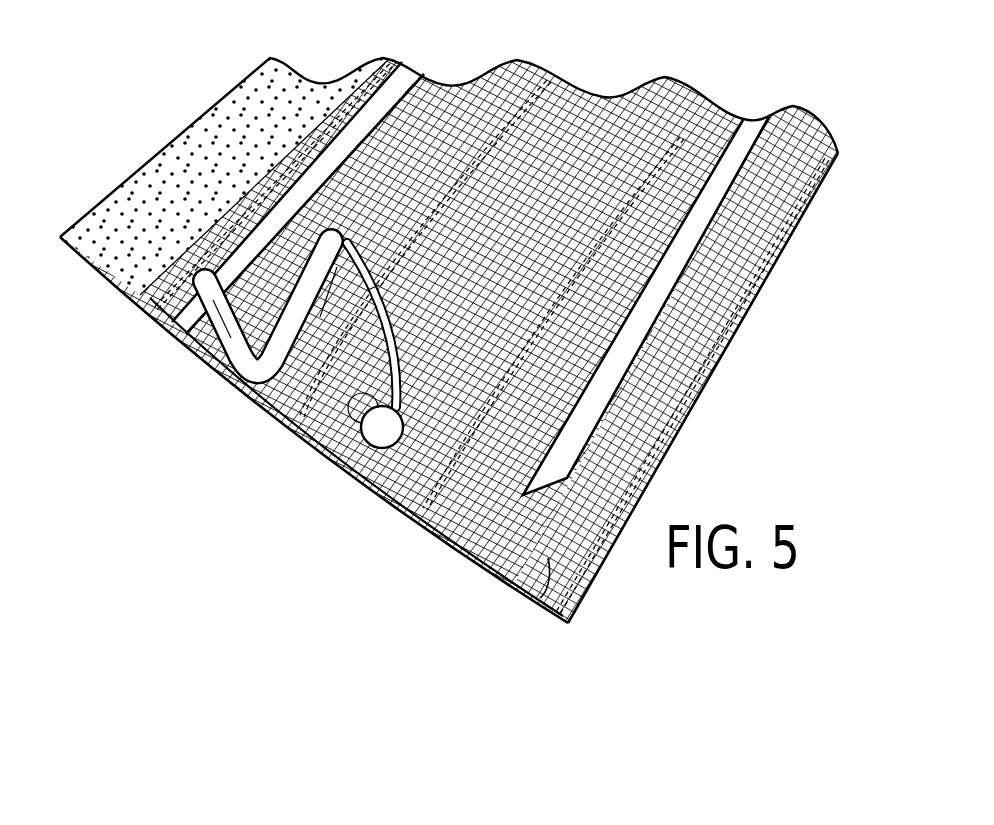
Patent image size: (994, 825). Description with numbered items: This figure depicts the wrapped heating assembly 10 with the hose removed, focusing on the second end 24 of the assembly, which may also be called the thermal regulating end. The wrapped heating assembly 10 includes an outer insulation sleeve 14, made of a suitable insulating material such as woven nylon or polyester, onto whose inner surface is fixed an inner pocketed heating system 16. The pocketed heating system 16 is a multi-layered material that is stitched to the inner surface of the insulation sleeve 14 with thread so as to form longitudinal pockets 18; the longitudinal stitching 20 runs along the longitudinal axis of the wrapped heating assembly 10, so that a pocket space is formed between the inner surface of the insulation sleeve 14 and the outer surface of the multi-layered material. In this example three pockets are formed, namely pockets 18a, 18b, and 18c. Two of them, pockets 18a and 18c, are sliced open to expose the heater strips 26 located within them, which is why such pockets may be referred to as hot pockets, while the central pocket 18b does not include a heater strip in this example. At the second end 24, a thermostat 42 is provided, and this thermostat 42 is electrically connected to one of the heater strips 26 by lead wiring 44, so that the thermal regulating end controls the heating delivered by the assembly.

The wrapped heating assembly 10 is at (475, 344).
The outer insulation sleeve 14 is at (107, 240).
The inner pocketed heating system 16 is at (297, 484).
The longitudinal pocket 18 is at (450, 344).
The first pocket 18a is at (161, 314).
The central pocket 18b is at (293, 425).
The third pocket 18c is at (540, 598).
The longitudinal stitching 20 is at (741, 322).
The second end 24 is at (253, 398).
The heater strip 26 is at (411, 97).
The thermostat 42 is at (375, 435).
The lead wiring 44 is at (349, 240).